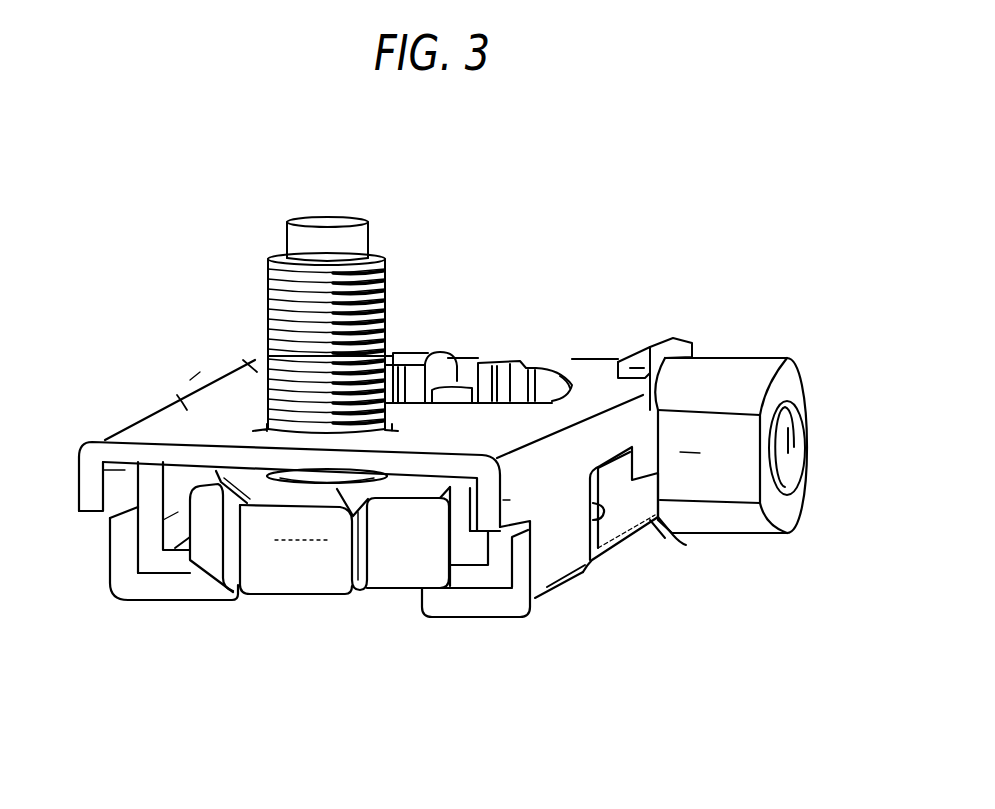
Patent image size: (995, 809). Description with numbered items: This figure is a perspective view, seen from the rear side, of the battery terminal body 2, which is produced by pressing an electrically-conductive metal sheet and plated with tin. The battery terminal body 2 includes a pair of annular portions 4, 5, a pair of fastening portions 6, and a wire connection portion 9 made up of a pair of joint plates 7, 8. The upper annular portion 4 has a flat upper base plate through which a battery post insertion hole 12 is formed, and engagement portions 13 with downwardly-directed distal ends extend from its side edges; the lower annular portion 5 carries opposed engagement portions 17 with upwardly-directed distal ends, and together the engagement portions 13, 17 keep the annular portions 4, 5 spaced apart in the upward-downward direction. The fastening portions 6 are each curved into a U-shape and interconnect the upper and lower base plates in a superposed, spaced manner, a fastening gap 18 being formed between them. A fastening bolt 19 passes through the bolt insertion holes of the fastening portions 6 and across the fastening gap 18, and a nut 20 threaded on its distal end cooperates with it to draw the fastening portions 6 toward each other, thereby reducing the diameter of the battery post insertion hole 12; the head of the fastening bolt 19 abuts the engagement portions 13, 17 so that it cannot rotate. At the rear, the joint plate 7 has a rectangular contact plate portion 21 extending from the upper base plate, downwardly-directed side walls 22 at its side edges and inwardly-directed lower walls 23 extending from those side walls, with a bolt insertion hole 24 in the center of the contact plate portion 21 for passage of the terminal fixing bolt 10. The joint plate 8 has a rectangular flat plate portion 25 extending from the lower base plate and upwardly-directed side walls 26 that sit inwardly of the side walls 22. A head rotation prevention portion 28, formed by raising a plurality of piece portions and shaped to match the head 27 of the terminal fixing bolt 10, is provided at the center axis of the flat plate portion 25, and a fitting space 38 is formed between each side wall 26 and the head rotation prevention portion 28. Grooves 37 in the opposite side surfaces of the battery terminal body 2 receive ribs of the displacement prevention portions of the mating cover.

The battery terminal body 2 is at (583, 221).
The annular portion 4 is at (251, 365).
The annular portion 5 is at (607, 553).
The fastening portion 6 is at (400, 350).
The joint plate 7 is at (176, 396).
The joint plate 8 is at (463, 580).
The wire connection portion 9 is at (208, 390).
The terminal fixing bolt 10 is at (328, 222).
The battery post insertion hole 12 is at (510, 387).
The engagement portion 13 is at (648, 455).
The engagement portion 17 is at (660, 535).
The fastening gap 18 is at (462, 363).
The fastening bolt 19 is at (784, 437).
The nut 20 is at (715, 368).
The contact plate portion 21 is at (158, 428).
The side wall 22 is at (127, 530).
The lower wall 23 is at (187, 590).
The bolt insertion hole 24 is at (388, 428).
The rectangular flat plate portion 25 is at (175, 513).
The side wall 26 is at (147, 482).
The head 27 is at (290, 500).
The head rotation prevention portion 28 is at (310, 560).
The groove 37 is at (592, 505).
The fitting space 38 is at (120, 573).